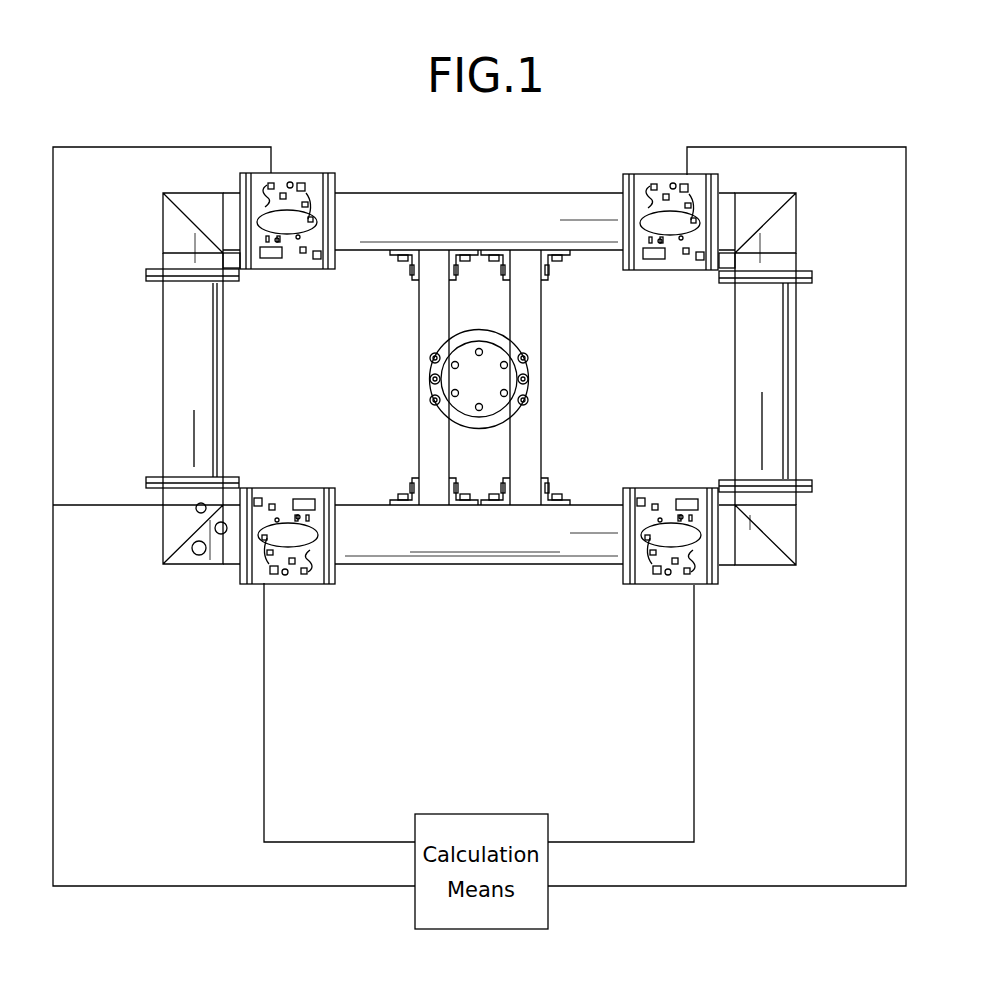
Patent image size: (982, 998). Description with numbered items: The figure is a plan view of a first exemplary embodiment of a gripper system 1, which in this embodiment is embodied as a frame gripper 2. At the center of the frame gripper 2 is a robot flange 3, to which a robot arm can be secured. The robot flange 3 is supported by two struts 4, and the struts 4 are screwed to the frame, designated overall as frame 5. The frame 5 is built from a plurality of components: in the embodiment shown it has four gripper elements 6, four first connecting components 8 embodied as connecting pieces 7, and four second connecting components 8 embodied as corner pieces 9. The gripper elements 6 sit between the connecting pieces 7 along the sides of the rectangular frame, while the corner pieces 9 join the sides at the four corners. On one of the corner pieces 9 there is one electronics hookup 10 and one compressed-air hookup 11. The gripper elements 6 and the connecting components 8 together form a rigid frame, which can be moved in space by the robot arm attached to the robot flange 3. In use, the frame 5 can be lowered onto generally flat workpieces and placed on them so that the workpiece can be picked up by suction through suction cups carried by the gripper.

The gripper system 1 is at (172, 144).
The frame gripper 2 is at (475, 402).
The robot flange 3 is at (462, 384).
The struts 4 is at (433, 497).
The frame 5 is at (393, 564).
The gripper elements 6 is at (315, 170).
The connecting pieces 7 is at (481, 398).
The connecting components 8 is at (475, 398).
The corner pieces 9 is at (170, 228).
The electronics hookup 10 is at (199, 509).
The compressed-air hookup 11 is at (205, 557).